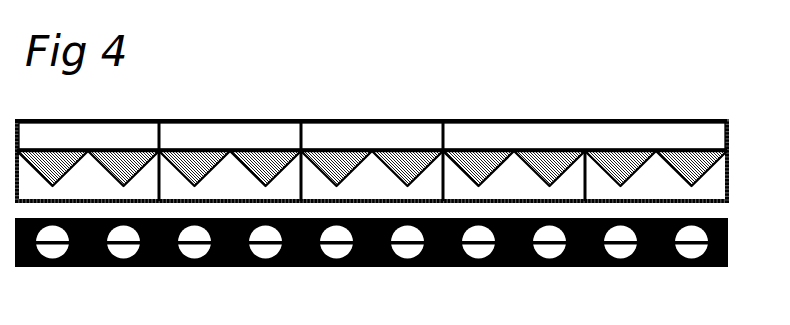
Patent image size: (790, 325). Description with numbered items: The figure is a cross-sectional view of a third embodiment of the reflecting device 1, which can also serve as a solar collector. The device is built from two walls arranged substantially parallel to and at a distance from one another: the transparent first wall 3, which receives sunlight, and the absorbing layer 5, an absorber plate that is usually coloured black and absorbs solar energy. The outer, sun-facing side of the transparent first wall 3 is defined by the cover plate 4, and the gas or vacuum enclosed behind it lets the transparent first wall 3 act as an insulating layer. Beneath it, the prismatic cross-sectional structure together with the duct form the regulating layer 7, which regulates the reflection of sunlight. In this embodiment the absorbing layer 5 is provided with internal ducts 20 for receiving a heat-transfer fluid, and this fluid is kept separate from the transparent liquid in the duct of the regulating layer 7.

The reflecting device 1 is at (594, 108).
The transparent first wall 3 is at (682, 134).
The cover plate 4 is at (222, 119).
The absorbing layer 5 is at (728, 252).
The regulating layer 7 is at (692, 165).
The internal ducts 20 is at (128, 250).